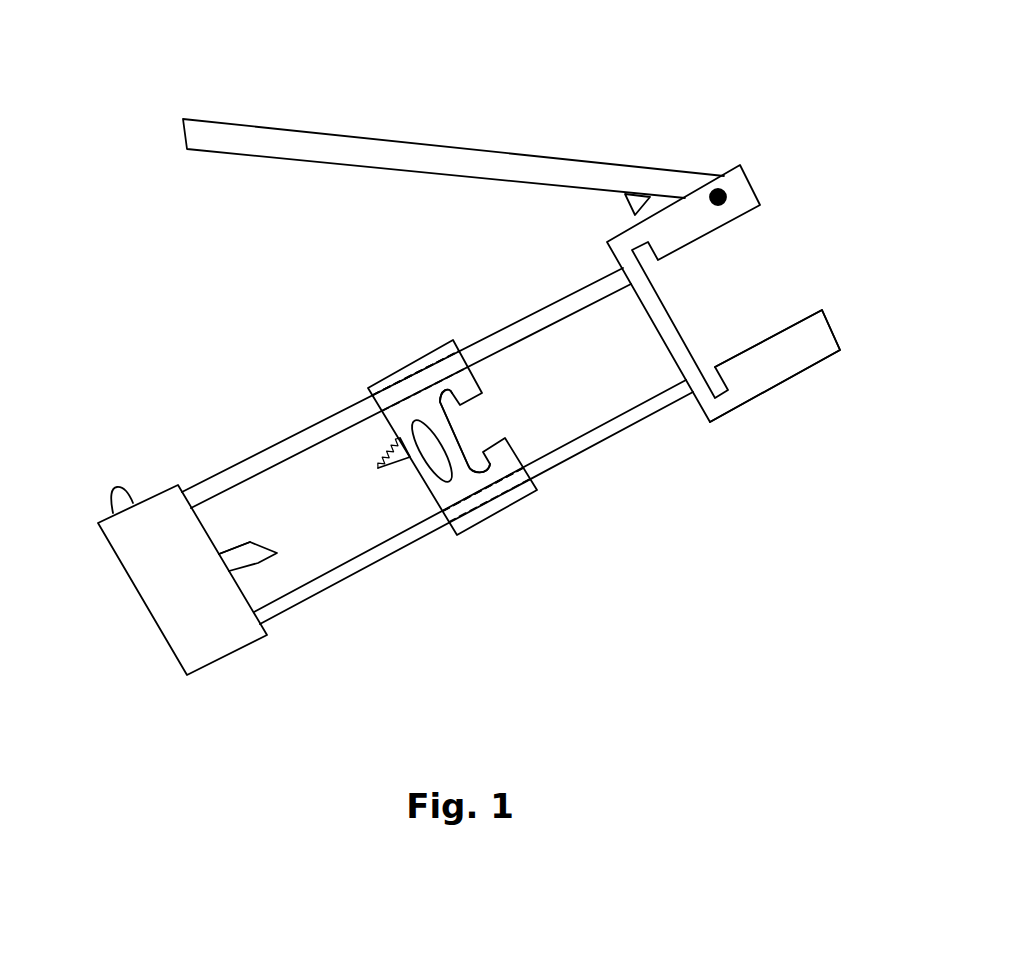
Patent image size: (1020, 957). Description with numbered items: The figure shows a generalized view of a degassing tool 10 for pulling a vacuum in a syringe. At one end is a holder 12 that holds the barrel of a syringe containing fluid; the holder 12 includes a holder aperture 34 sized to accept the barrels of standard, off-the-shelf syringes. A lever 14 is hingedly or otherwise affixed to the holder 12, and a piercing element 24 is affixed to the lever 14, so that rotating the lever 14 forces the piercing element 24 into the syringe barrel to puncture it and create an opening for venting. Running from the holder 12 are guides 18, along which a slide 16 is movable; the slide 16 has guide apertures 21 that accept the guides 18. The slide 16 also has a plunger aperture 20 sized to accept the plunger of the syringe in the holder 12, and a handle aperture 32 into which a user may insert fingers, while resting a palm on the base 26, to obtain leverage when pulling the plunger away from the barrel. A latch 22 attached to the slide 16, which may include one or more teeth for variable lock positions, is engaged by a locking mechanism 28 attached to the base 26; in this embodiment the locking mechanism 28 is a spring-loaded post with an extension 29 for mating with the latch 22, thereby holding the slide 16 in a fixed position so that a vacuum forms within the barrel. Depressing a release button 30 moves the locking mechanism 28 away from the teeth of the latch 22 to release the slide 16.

The degassing tool 10 is at (410, 64).
The holder 12 is at (747, 180).
The lever 14 is at (450, 147).
The slide 16 is at (505, 508).
The guides 18 is at (620, 432).
The plunger aperture 20 is at (492, 425).
The guide apertures 21 is at (462, 338).
The latch 22 is at (380, 462).
The piercing element 24 is at (622, 206).
The base 26 is at (230, 653).
The locking mechanism 28 is at (258, 563).
The extension 29 is at (248, 541).
The release button 30 is at (115, 487).
The handle aperture 32 is at (437, 470).
The holder aperture 34 is at (752, 305).